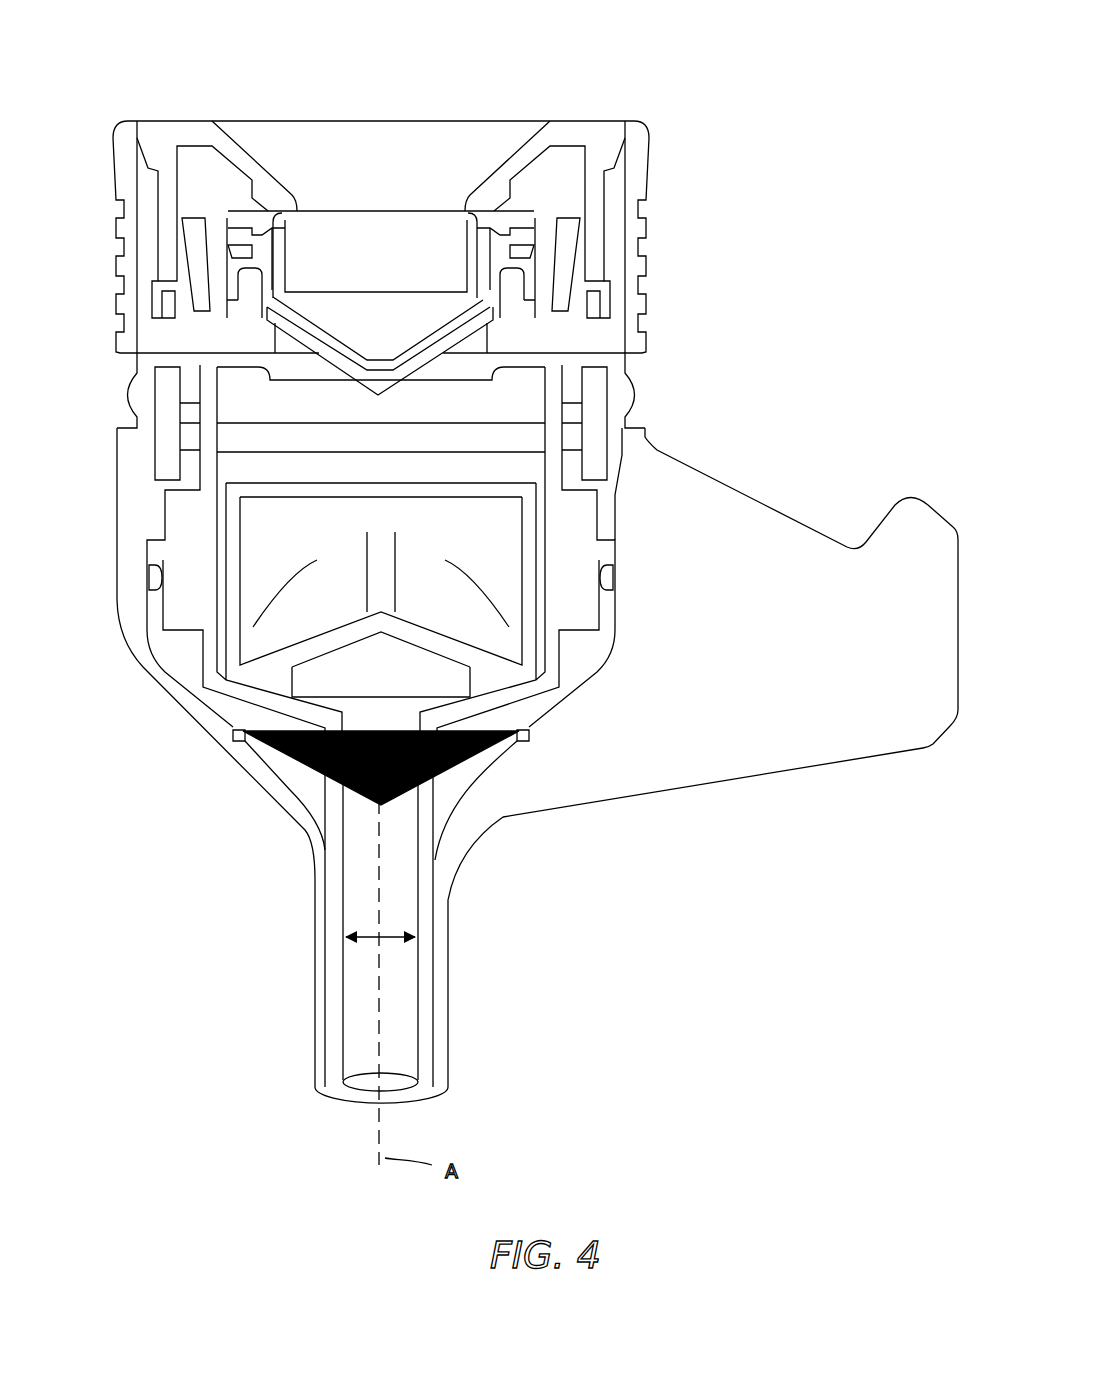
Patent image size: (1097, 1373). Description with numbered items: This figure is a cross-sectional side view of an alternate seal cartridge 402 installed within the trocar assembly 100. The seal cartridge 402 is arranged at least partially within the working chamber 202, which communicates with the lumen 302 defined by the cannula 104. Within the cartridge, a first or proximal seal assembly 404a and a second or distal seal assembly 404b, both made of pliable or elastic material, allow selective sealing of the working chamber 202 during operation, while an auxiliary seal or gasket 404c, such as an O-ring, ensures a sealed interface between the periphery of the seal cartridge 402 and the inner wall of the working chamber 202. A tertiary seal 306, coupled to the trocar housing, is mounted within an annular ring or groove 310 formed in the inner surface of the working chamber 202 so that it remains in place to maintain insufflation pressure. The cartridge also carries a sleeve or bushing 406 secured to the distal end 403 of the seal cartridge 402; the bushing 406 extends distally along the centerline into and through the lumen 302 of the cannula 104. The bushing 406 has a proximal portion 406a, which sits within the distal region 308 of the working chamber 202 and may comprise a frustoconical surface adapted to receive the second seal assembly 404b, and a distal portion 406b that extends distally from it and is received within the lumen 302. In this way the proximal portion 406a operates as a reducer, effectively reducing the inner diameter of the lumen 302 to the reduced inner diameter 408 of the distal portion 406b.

The trocar assembly 100 is at (501, 601).
The seal cartridge 402 is at (419, 426).
The distal end 403 is at (660, 592).
The first seal assembly 404a is at (282, 322).
The second seal assembly 404b is at (318, 630).
The auxiliary seal 404c is at (150, 576).
The working chamber 202 is at (300, 437).
The annular ring or groove 310 is at (232, 735).
The distal region 308 is at (302, 771).
The tertiary seal 306 is at (373, 811).
The lumen 302 is at (405, 1050).
The bushing 406 is at (411, 765).
The proximal portion 406a is at (548, 657).
The distal portion 406b is at (432, 1003).
The reduced inner diameter 408 is at (365, 943).
The cannula 104 is at (315, 1047).